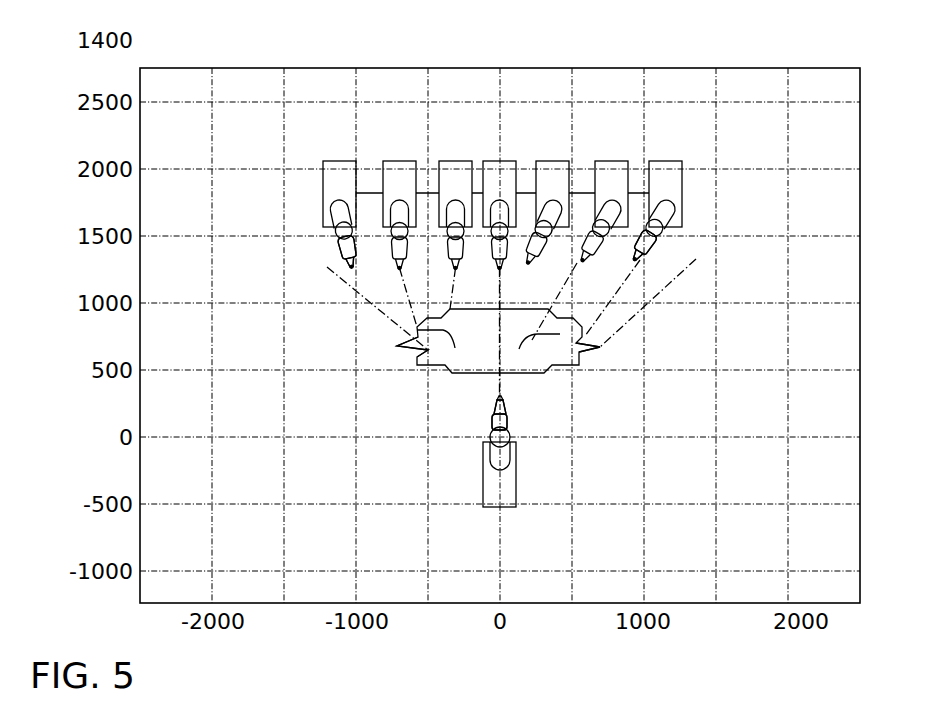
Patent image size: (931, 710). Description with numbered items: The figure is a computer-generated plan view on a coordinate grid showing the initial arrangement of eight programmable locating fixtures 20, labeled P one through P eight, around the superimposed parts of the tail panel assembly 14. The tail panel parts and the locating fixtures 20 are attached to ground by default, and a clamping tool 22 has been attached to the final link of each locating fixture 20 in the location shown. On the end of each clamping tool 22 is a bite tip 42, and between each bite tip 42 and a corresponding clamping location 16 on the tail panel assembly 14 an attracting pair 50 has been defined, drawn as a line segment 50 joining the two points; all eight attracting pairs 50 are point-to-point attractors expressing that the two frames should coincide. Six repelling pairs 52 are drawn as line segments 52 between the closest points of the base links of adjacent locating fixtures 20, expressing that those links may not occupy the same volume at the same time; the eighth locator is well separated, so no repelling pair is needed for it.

The tail panel assembly 14 is at (579, 360).
The clamping location 16 is at (600, 350).
The locating fixture 20 is at (512, 500).
The clamping tool 22 is at (505, 417).
The bite tip 42 is at (500, 398).
The attracting pair 50 is at (498, 382).
The repelling pair 52 is at (638, 193).